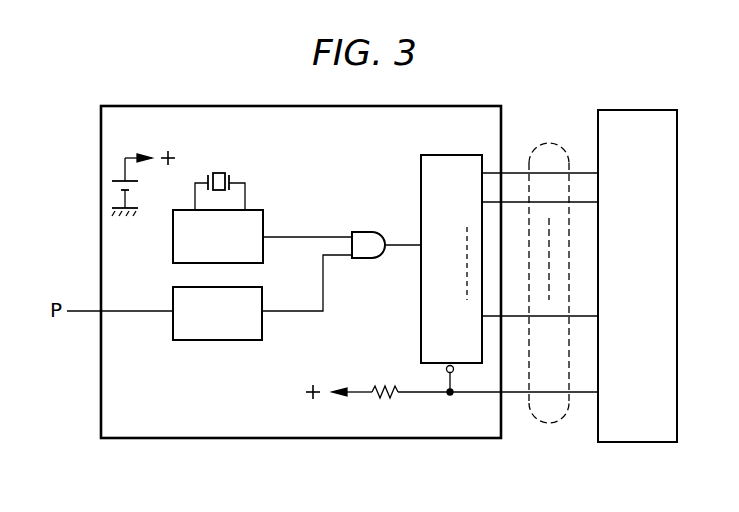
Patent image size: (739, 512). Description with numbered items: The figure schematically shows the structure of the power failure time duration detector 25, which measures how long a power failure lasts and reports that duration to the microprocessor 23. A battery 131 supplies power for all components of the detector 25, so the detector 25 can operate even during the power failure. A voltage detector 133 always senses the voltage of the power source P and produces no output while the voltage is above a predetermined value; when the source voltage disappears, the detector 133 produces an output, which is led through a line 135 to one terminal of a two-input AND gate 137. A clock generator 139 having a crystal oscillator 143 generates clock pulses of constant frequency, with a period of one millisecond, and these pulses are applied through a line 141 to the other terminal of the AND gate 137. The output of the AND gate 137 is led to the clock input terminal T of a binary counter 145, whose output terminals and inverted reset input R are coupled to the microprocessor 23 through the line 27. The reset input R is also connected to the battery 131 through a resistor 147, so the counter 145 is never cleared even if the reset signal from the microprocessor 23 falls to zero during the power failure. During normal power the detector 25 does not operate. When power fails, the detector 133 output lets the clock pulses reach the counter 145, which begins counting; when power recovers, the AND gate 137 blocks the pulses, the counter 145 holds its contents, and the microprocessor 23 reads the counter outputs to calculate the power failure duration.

The microprocessor 23 is at (633, 444).
The power failure time duration detector 25 is at (265, 440).
The line 27 is at (547, 424).
The battery 131 is at (135, 185).
The voltage detector 133 is at (218, 340).
The line 135 is at (297, 313).
The two-input AND gate 137 is at (367, 261).
The clock generator 139 is at (263, 251).
The line 141 is at (300, 236).
The crystal oscillator 143 is at (222, 170).
The binary counter 145 is at (446, 136).
The resistor 147 is at (387, 401).